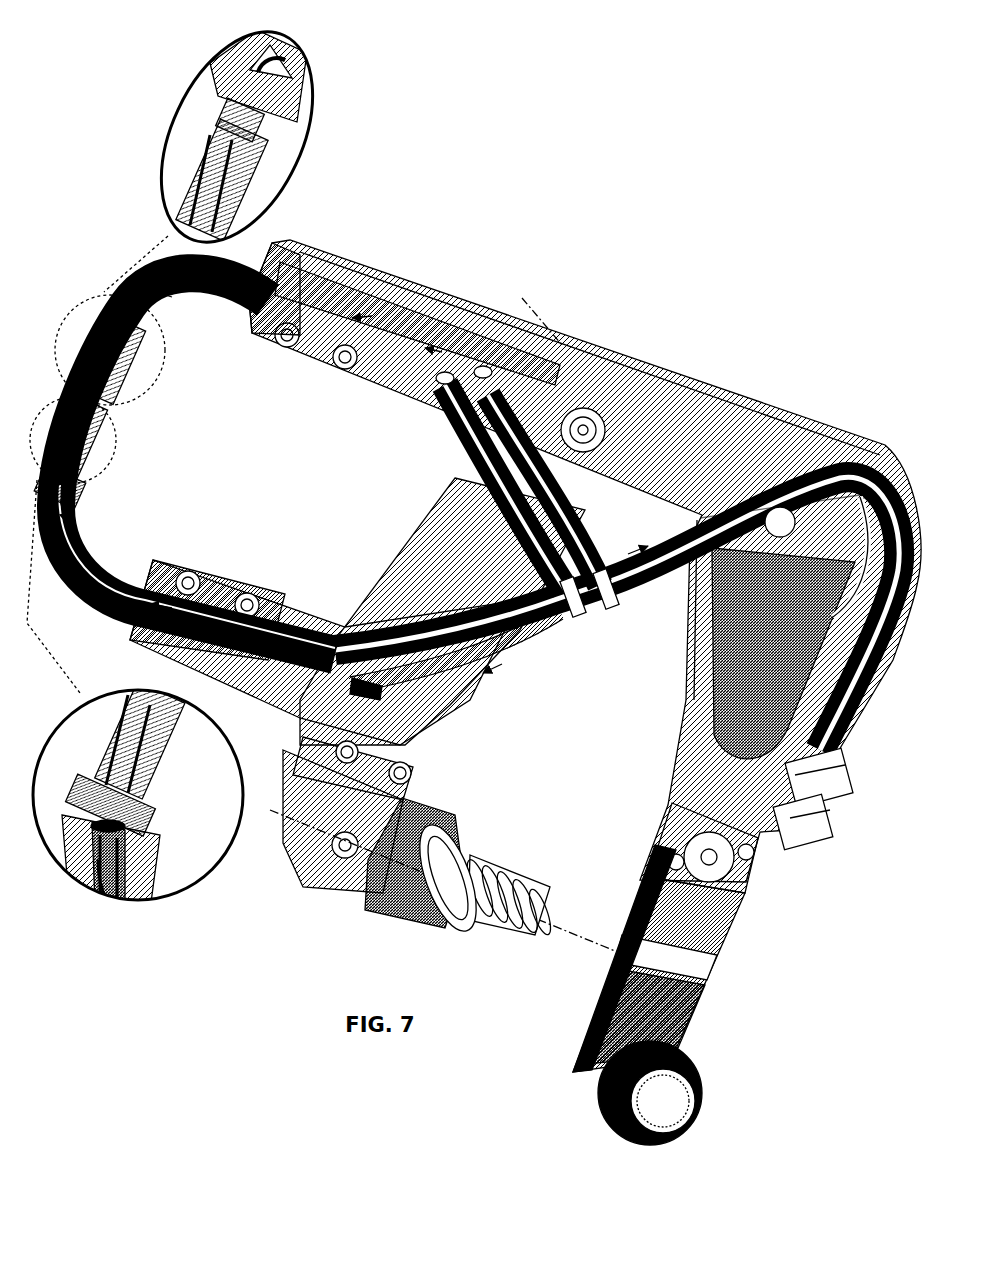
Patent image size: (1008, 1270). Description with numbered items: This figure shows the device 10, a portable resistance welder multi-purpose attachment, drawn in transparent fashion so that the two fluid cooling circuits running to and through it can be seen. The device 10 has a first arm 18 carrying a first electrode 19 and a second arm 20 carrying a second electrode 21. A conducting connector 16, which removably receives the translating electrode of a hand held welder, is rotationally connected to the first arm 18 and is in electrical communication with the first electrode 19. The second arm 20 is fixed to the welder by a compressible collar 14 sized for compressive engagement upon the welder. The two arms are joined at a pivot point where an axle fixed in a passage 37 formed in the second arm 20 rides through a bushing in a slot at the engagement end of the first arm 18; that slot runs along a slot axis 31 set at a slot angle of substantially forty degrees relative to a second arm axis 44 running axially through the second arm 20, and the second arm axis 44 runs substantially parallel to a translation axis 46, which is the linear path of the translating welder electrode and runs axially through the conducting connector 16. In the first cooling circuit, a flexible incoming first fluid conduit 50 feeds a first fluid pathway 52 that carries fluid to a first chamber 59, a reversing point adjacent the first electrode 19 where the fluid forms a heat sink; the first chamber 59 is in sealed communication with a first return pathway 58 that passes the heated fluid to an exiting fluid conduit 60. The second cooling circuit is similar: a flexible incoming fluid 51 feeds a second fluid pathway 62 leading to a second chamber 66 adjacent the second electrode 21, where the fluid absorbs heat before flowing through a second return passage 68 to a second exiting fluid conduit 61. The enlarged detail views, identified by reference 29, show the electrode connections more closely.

The device 10 is at (437, 252).
The compressible collar 14 is at (688, 957).
The conducting connector 16 is at (500, 873).
The first arm 18 is at (215, 590).
The first electrode 19 is at (93, 442).
The second arm 20 is at (313, 353).
The second electrode 21 is at (260, 175).
The connection assembly 29 is at (75, 383).
The slot axis 31 is at (532, 320).
The passage 37 is at (568, 387).
The second arm axis 44 is at (690, 460).
The translation axis 46 is at (585, 932).
The incoming first fluid conduit 50 is at (488, 678).
The incoming fluid 51 is at (497, 365).
The first fluid pathway 52 is at (105, 588).
The first return pathway 58 is at (83, 548).
The first chamber 59 is at (117, 830).
The exiting fluid conduit 60 is at (373, 640).
The second exiting fluid conduit 61 is at (463, 412).
The second fluid pathway 62 is at (283, 45).
The second chamber 66 is at (280, 67).
The second return passage 68 is at (265, 60).